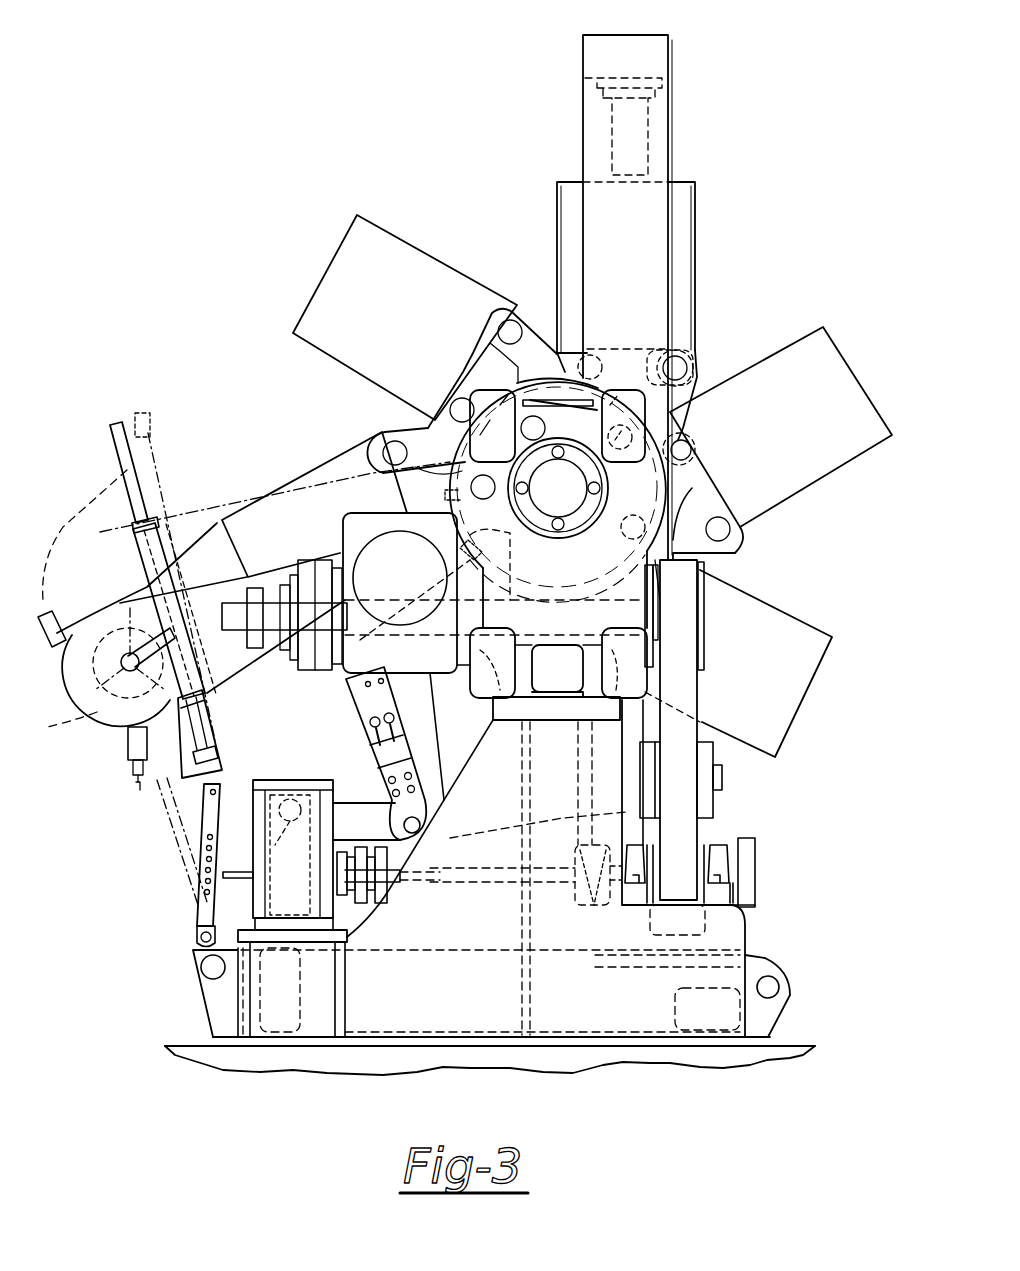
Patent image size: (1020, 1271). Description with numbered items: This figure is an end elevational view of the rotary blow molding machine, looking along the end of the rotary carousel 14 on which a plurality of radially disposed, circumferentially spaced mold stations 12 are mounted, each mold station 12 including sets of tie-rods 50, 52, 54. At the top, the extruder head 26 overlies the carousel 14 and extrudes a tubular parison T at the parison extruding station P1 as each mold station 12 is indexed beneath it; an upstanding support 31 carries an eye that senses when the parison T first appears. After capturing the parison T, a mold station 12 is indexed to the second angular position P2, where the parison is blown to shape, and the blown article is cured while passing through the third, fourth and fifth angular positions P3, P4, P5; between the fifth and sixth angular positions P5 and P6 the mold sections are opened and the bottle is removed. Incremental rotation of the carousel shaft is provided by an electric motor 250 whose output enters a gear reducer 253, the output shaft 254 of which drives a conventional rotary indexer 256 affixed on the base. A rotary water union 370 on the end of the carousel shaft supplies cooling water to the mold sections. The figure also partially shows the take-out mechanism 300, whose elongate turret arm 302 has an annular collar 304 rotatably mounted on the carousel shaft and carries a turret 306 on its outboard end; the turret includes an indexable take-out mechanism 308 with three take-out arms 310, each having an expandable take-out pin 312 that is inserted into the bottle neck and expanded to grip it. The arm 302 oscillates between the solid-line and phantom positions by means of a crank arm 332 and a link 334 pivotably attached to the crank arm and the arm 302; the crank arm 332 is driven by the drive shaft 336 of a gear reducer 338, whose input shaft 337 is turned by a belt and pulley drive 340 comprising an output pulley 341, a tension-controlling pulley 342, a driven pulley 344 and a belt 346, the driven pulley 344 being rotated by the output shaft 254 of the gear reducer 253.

The mold station 12 is at (698, 283).
The rotary carousel 14 is at (415, 420).
The extruder head 26 is at (655, 102).
The upstanding support 31 is at (665, 158).
The tie-rod 50 is at (557, 354).
The tie-rod 52 is at (678, 370).
The tie-rod 54 is at (690, 423).
The electric motor 250 is at (385, 650).
The gear reducer 253 is at (368, 732).
The output shaft of the gear reducer 254 is at (527, 702).
The rotary indexer 256 is at (673, 493).
The take-out mechanism 300 is at (187, 410).
The elongate turret arm 302 is at (192, 668).
The annular collar 304 is at (555, 503).
The turret 306 is at (127, 753).
The indexable take-out mechanism 308 is at (103, 700).
The take-out arm 310 is at (62, 620).
The expandable take-out pin 312 is at (141, 775).
The crank arm 332 is at (357, 810).
The link 334 is at (398, 753).
The drive shaft 336 is at (200, 908).
The input shaft 337 is at (447, 880).
The gear reducer 338 is at (253, 797).
The belt and pulley drive 340 is at (702, 829).
The output pulley 341 is at (752, 840).
The tension-controlling pulley 342 is at (708, 735).
The driven pulley 344 is at (703, 618).
The belt 346 is at (683, 682).
The rotary water union 370 is at (579, 501).
The parison T is at (612, 148).
The parison extruding station P1 is at (697, 228).
The second angular position P2 is at (860, 362).
The third angular position P3 is at (793, 745).
The fourth angular position P4 is at (493, 827).
The fifth angular position P5 is at (217, 511).
The sixth angular position P6 is at (330, 252).